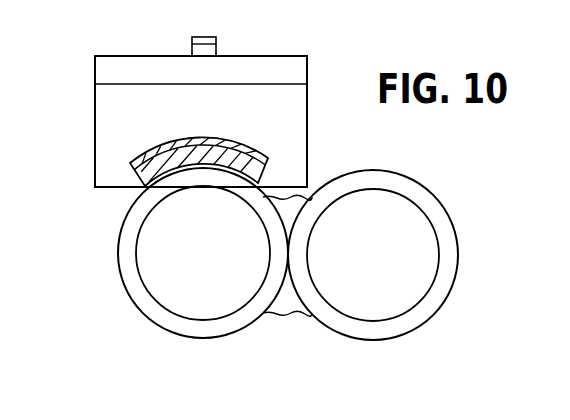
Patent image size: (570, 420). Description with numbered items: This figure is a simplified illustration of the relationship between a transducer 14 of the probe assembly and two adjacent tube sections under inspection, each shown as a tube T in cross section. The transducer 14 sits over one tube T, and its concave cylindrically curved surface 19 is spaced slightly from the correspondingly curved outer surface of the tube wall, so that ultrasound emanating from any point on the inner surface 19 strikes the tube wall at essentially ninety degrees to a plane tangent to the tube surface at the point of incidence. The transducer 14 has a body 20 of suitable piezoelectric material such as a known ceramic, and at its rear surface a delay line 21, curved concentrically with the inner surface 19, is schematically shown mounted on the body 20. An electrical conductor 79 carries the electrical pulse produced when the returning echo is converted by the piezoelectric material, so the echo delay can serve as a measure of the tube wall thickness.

The transducer 14 is at (211, 167).
The concave cylindrically curved surface 19 is at (225, 173).
The body 20 is at (140, 182).
The delay line 21 is at (167, 146).
The electrical conductor 79 is at (212, 37).
The tube T is at (117, 257).